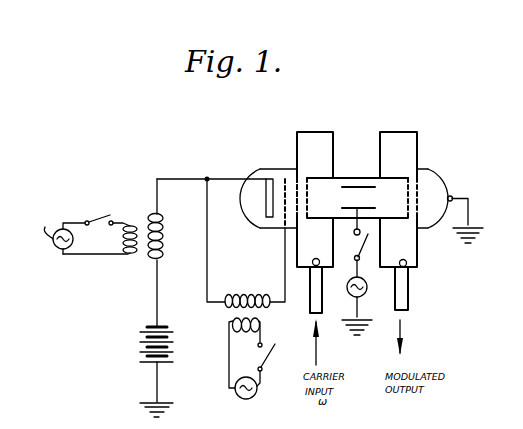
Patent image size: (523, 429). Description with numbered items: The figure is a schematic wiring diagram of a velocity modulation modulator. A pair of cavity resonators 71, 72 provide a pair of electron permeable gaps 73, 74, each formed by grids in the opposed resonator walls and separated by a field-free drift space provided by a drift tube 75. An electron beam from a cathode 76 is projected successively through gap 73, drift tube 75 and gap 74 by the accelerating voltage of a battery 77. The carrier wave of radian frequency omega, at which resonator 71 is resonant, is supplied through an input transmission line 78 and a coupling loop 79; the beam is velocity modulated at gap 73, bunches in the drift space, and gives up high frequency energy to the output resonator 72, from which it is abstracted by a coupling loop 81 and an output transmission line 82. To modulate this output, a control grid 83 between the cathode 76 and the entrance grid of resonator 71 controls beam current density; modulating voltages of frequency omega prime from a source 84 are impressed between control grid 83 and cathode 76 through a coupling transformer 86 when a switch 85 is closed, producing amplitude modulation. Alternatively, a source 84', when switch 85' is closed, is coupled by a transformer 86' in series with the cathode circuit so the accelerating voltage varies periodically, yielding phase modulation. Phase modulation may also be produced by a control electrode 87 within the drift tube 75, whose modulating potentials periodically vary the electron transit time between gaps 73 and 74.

The cavity resonator 71 is at (313, 131).
The cavity resonator 72 is at (403, 131).
The electron permeable gap 73 is at (303, 178).
The electron permeable gap 74 is at (416, 183).
The drift tube 75 is at (353, 178).
The cathode 76 is at (265, 178).
The battery 77 is at (134, 345).
The input transmission line 78 is at (310, 298).
The coupling loop 79 is at (325, 247).
The coupling loop 81 is at (406, 262).
The output transmission line 82 is at (408, 302).
The control grid 83 is at (284, 178).
The source 84 is at (228, 400).
The source 84' is at (61, 247).
The switch 85 is at (271, 368).
The switch 85' is at (97, 209).
The coupling transformer 86 is at (225, 353).
The transformer 86' is at (113, 217).
The control electrode 87 is at (341, 187).